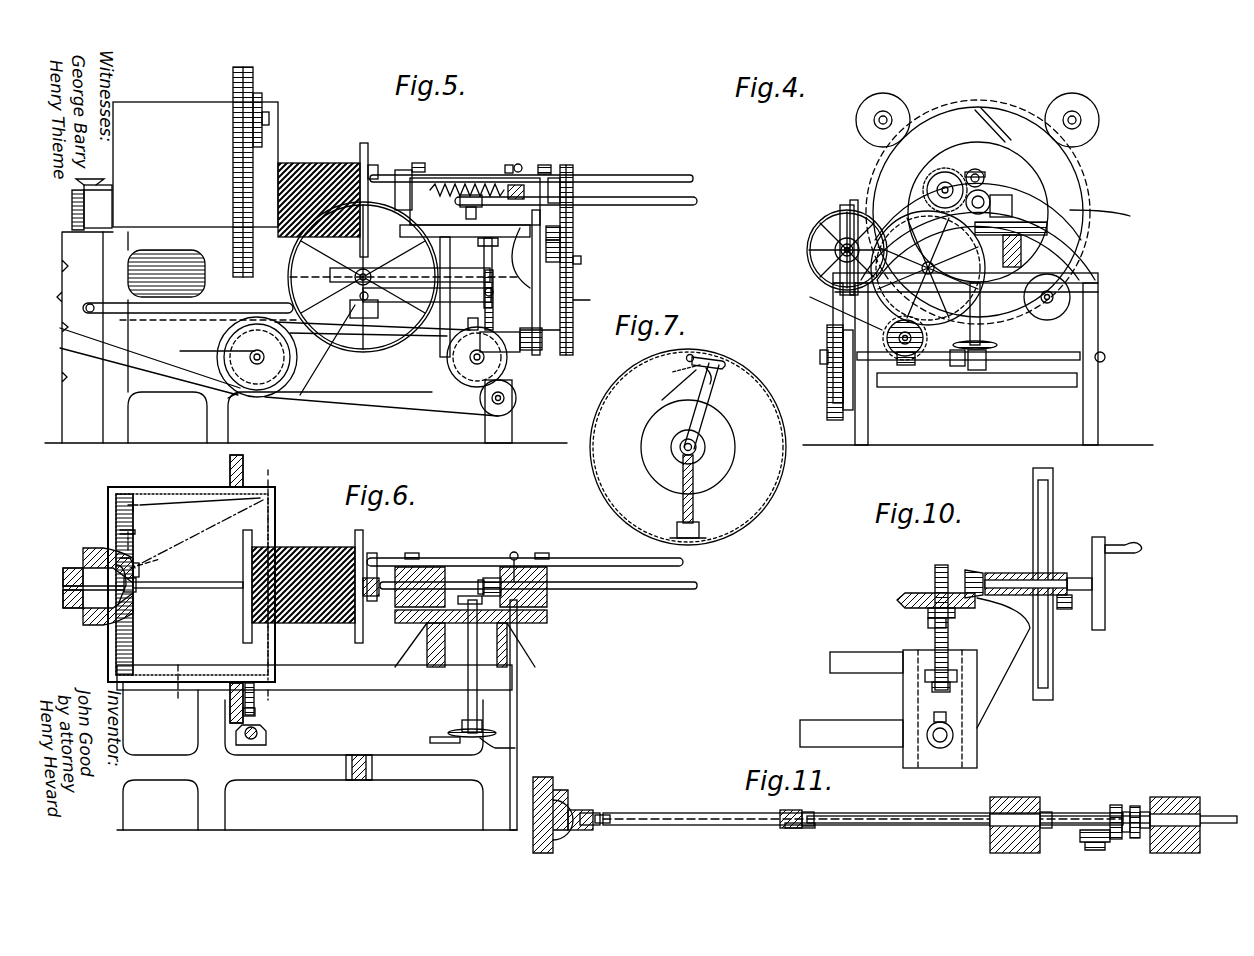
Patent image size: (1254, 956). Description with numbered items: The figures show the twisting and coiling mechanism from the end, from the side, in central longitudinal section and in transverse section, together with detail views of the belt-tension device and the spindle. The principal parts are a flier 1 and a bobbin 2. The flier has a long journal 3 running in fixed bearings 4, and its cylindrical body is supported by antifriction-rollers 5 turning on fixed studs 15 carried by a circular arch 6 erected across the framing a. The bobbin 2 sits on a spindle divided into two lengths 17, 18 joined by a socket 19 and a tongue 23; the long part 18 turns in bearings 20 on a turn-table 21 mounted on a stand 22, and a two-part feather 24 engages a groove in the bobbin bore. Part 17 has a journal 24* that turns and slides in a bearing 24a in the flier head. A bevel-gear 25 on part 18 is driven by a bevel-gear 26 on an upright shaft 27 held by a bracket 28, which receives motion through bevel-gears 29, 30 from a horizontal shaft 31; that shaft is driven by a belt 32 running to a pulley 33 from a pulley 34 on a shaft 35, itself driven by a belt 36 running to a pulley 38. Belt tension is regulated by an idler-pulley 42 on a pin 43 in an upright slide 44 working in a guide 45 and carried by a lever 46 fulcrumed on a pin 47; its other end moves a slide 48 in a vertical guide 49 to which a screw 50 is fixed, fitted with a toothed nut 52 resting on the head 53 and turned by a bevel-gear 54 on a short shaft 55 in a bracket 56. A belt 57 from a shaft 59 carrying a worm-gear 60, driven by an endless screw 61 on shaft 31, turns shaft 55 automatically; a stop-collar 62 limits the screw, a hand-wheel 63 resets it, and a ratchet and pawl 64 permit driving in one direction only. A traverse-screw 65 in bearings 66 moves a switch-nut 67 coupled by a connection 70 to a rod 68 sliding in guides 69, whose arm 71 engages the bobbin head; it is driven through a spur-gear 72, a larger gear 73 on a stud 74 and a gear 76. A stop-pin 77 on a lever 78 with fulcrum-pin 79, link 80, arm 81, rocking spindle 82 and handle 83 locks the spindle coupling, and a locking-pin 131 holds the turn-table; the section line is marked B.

In FIG. 5, the flier 1 is at (195, 164).
In FIG. 4, the flier 1 is at (993, 119).
In FIG. 6, the flier 1 is at (160, 487).
In FIG. 5, the bobbin 2 is at (328, 199).
In FIG. 4, the bobbin 2 is at (1010, 150).
In FIG. 6, the bobbin 2 is at (311, 588).
In FIG. 5, the journal 3 is at (68, 210).
In FIG. 6, the journal 3 is at (82, 582).
In FIG. 5, the bearings 4 is at (94, 203).
In FIG. 6, the bearings 4 is at (104, 584).
In FIG. 5, the antifriction-rollers 5 is at (258, 95).
In FIG. 4, the antifriction-rollers 5 is at (977, 211).
In FIG. 6, the antifriction-rollers 5 is at (254, 712).
In FIG. 5, the circular frame or arch 6 is at (233, 182).
In FIG. 4, the circular frame or arch 6 is at (978, 154).
In FIG. 6, the circular frame or arch 6 is at (230, 712).
In FIG. 5, the fixed studs 15 is at (270, 118).
In FIG. 4, the fixed studs 15 is at (878, 122).
In FIG. 6, the fixed studs 15 is at (255, 708).
In FIG. 6, the spindle part 17 is at (225, 582).
In FIG. 11, the spindle part 17 is at (700, 813).
In FIG. 5, the spindle part 18 is at (665, 205).
In FIG. 4, the spindle part 18 is at (993, 189).
In FIG. 6, the spindle part 18 is at (640, 589).
In FIG. 11, the spindle part 18 is at (1022, 806).
In FIG. 11, the socket 19 is at (790, 828).
In FIG. 5, the bearings 20 is at (475, 201).
In FIG. 4, the bearings 20 is at (1010, 200).
In FIG. 6, the bearings 20 is at (547, 615).
In FIG. 11, the bearings 20 is at (1095, 813).
In FIG. 4, the turn-table 21 is at (1011, 218).
In FIG. 6, the turn-table 21 is at (427, 630).
In FIG. 5, the stand 22 is at (465, 291).
In FIG. 6, the stand 22 is at (510, 648).
In FIG. 11, the tongue 23 is at (810, 812).
In FIG. 6, the longitudinal feather 24 is at (225, 590).
In FIG. 11, the longitudinal feather 24 is at (605, 815).
In FIG. 7, the bearing 24a is at (700, 455).
In FIG. 6, the bevel-gear 25 is at (490, 578).
In FIG. 11, the bevel-gear 25 is at (1115, 805).
In FIG. 5, the bevel-gear 26 is at (470, 195).
In FIG. 6, the bevel-gear 26 is at (466, 596).
In FIG. 11, the bevel-gear 26 is at (1088, 830).
In FIG. 4, the upright shaft 27 is at (990, 314).
In FIG. 6, the upright shaft 27 is at (466, 666).
In FIG. 4, the bracket 28 is at (980, 370).
In FIG. 6, the bracket 28 is at (440, 737).
In FIG. 4, the bevel-gear 29 is at (990, 342).
In FIG. 6, the bevel-gear 29 is at (462, 730).
In FIG. 4, the bevel-gear 30 is at (960, 368).
In FIG. 5, the horizontal shaft 31 is at (470, 362).
In FIG. 4, the horizontal shaft 31 is at (820, 356).
In FIG. 5, the belt 32 is at (390, 377).
In FIG. 4, the belt 32 is at (838, 368).
In FIG. 5, the pulley 33 is at (398, 357).
In FIG. 4, the pulley 33 is at (827, 330).
In FIG. 5, the pulley 34 is at (257, 357).
In FIG. 5, the shaft 35 is at (207, 350).
In FIG. 4, the shaft 35 is at (1114, 357).
In FIG. 6, the shaft 35 is at (255, 745).
In FIG. 5, the belt 36 is at (150, 361).
In FIG. 5, the pulley 38 is at (252, 392).
In FIG. 5, the idler-pulley 42 is at (363, 277).
In FIG. 4, the idler-pulley 42 is at (840, 222).
In FIG. 5, the pin 43 is at (405, 267).
In FIG. 5, the upright slide 44 is at (366, 318).
In FIG. 5, the upright guide 45 is at (327, 350).
In FIG. 5, the lever 46 is at (427, 289).
In FIG. 10, the lever 46 is at (851, 733).
In FIG. 5, the pin 47 is at (83, 308).
In FIG. 5, the slide 48 is at (497, 307).
In FIG. 10, the slide 48 is at (953, 740).
In FIG. 5, the vertical guide 49 is at (506, 300).
In FIG. 10, the vertical guide 49 is at (903, 702).
In FIG. 10, the screw 50 is at (935, 640).
In FIG. 10, the nut 52 is at (918, 593).
In FIG. 10, the head 53 is at (928, 612).
In FIG. 5, the bevel-gear 54 is at (491, 270).
In FIG. 10, the bevel-gear 54 is at (972, 570).
In FIG. 5, the short shaft 55 is at (562, 324).
In FIG. 4, the short shaft 55 is at (835, 255).
In FIG. 10, the short shaft 55 is at (1003, 578).
In FIG. 5, the bracket 56 is at (591, 306).
In FIG. 4, the bracket 56 is at (830, 250).
In FIG. 10, the bracket 56 is at (1053, 513).
In FIG. 5, the belt 57 is at (545, 282).
In FIG. 4, the belt 57 is at (827, 308).
In FIG. 5, the shaft 59 is at (561, 342).
In FIG. 4, the shaft 59 is at (900, 362).
In FIG. 5, the worm-gear 60 is at (459, 318).
In FIG. 4, the endless screw 61 is at (906, 366).
In FIG. 10, the stop-collar 62 is at (928, 625).
In FIG. 5, the hand-wheel 63 is at (562, 250).
In FIG. 4, the hand-wheel 63 is at (835, 243).
In FIG. 10, the hand-wheel 63 is at (1100, 597).
In FIG. 5, the ratchet-wheel and pawl 64 is at (562, 232).
In FIG. 10, the ratchet-wheel and pawl 64 is at (1068, 610).
In FIG. 5, the traverse-screw 65 is at (462, 184).
In FIG. 4, the traverse-screw 65 is at (930, 193).
In FIG. 7, the traverse-screw 65 is at (688, 456).
In FIG. 5, the bearings 66 is at (404, 178).
In FIG. 5, the switch-nut 67 is at (520, 165).
In FIG. 5, the rod 68 is at (536, 166).
In FIG. 4, the rod 68 is at (988, 160).
In FIG. 6, the rod 68 is at (525, 551).
In FIG. 5, the guides 69 is at (483, 157).
In FIG. 4, the guides 69 is at (972, 165).
In FIG. 6, the guides 69 is at (479, 544).
In FIG. 5, the connection 70 is at (507, 170).
In FIG. 6, the connection 70 is at (511, 551).
In FIG. 6, the arm 71 is at (375, 556).
In FIG. 5, the spur-gear 72 is at (567, 355).
In FIG. 5, the spur-gear 73 is at (550, 278).
In FIG. 5, the fixed stud 74 is at (590, 264).
In FIG. 4, the fixed stud 74 is at (928, 280).
In FIG. 5, the spur-gear 76 is at (574, 170).
In FIG. 4, the spur-gear 76 is at (939, 180).
In FIG. 7, the stop-pin 77 is at (703, 447).
In FIG. 6, the stop-pin 77 is at (138, 585).
In FIG. 11, the stop-pin 77 is at (585, 810).
In FIG. 7, the lever 78 is at (688, 447).
In FIG. 6, the lever 78 is at (135, 556).
In FIG. 7, the fulcrum-pin 79 is at (712, 385).
In FIG. 6, the fulcrum-pin 79 is at (136, 533).
In FIG. 7, the link 80 is at (695, 383).
In FIG. 7, the arm 81 is at (700, 356).
In FIG. 6, the arm 81 is at (149, 511).
In FIG. 7, the rocking spindle 82 is at (666, 392).
In FIG. 6, the rocking spindle 82 is at (200, 511).
In FIG. 7, the handle 83 is at (670, 376).
In FIG. 6, the handle 83 is at (200, 532).
In FIG. 4, the locking-pin 131 is at (1115, 214).
In FIG. 4, the framing a is at (993, 331).
In FIG. 6, the framing a is at (314, 678).
In FIG. 10, the framing a is at (866, 662).
In FIG. 6, the section line B is at (219, 590).